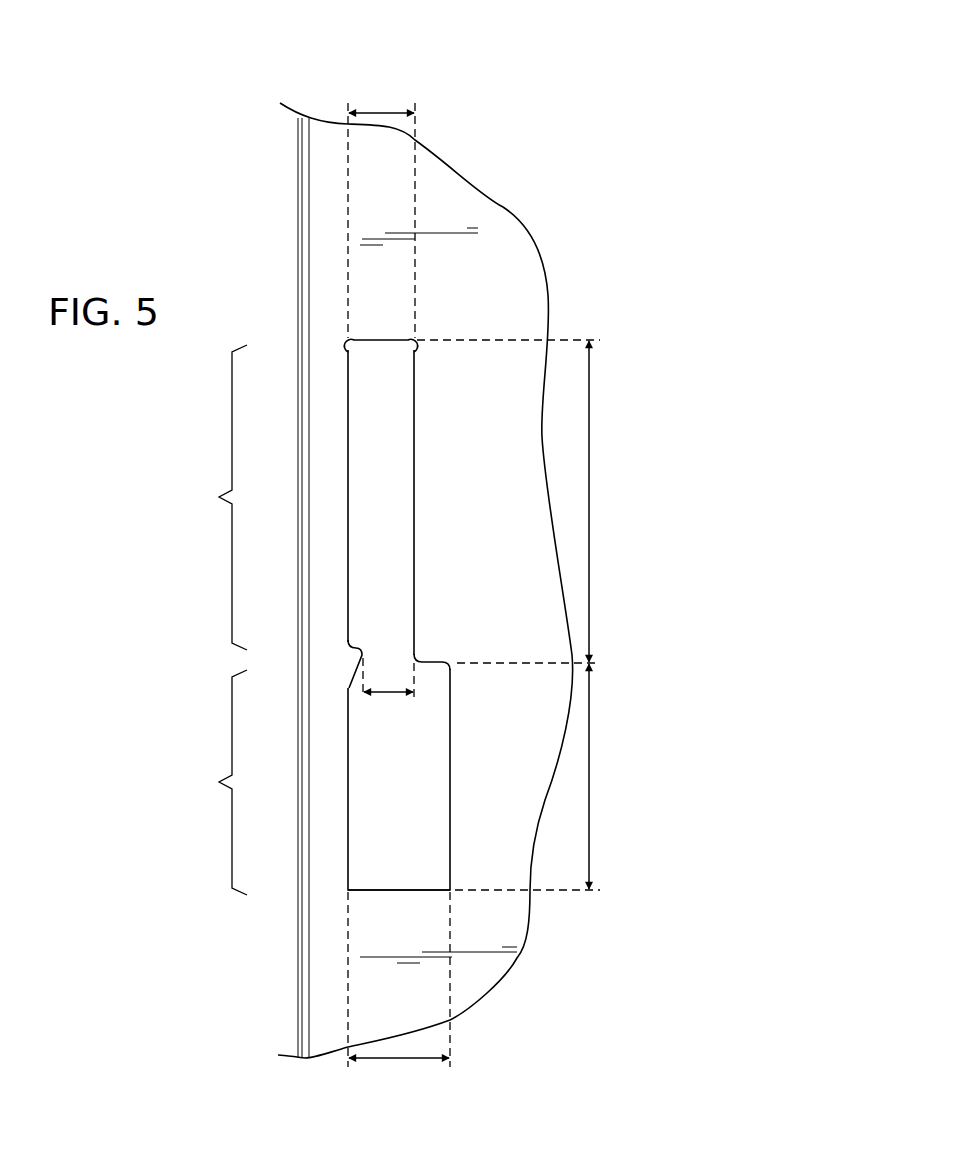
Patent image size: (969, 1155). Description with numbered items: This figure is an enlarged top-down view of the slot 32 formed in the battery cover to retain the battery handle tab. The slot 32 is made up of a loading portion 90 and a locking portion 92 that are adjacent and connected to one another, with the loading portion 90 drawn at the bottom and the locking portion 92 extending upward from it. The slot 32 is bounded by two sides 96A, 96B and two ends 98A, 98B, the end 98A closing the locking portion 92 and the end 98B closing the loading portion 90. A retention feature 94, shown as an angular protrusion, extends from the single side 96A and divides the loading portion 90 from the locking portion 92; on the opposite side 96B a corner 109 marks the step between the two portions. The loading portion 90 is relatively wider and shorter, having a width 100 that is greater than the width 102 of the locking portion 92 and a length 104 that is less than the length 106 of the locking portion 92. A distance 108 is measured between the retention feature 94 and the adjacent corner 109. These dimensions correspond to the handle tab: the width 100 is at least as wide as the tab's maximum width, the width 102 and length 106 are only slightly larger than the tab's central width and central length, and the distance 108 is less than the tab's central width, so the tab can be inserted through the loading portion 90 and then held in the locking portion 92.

The slot 32 is at (428, 70).
The loading portion 90 is at (316, 782).
The locking portion 92 is at (214, 497).
The retention feature 94 is at (358, 656).
The side 96A is at (348, 497).
The side 96B is at (417, 500).
The end 98A is at (380, 339).
The end 98B is at (398, 892).
The width of the loading portion 100 is at (398, 1062).
The width of the locking portion 102 is at (382, 111).
The length of the loading portion 104 is at (589, 778).
The length of the locking portion 106 is at (589, 500).
The distance 108 is at (388, 698).
The corner 109 is at (422, 655).